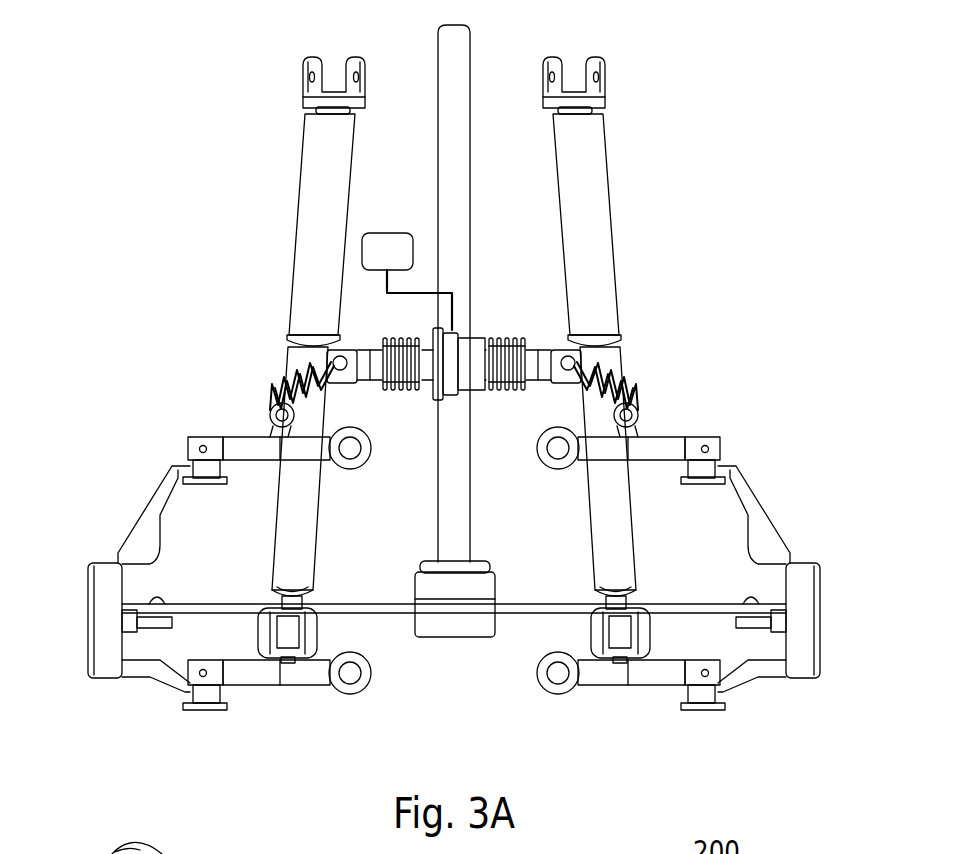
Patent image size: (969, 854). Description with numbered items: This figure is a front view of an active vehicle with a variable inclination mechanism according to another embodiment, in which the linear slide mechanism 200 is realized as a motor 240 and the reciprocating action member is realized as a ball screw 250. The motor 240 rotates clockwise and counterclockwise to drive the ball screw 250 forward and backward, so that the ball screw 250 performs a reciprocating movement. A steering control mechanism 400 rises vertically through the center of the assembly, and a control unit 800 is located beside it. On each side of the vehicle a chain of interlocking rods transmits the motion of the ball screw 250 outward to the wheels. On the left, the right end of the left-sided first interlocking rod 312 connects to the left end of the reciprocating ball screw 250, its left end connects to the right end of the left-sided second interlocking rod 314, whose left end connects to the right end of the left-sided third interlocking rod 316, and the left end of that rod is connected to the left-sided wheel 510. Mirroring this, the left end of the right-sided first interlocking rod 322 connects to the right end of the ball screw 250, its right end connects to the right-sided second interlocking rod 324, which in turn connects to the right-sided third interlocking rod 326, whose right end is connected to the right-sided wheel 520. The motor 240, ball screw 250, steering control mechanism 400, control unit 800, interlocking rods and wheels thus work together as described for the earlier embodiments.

The linear slide mechanism 200 is at (507, 212).
The motor 240 is at (478, 333).
The ball screw 250 is at (425, 390).
The left-sided first interlocking rod 312 is at (283, 382).
The left-sided second interlocking rod 314 is at (253, 437).
The left-sided third interlocking rod 316 is at (158, 513).
The right-sided first interlocking rod 322 is at (614, 359).
The right-sided second interlocking rod 324 is at (631, 408).
The right-sided third interlocking rod 326 is at (767, 483).
The steering control mechanism 400 is at (465, 97).
The left-sided wheel 510 is at (93, 615).
The right-sided wheel 520 is at (810, 588).
The control unit 800 is at (390, 232).